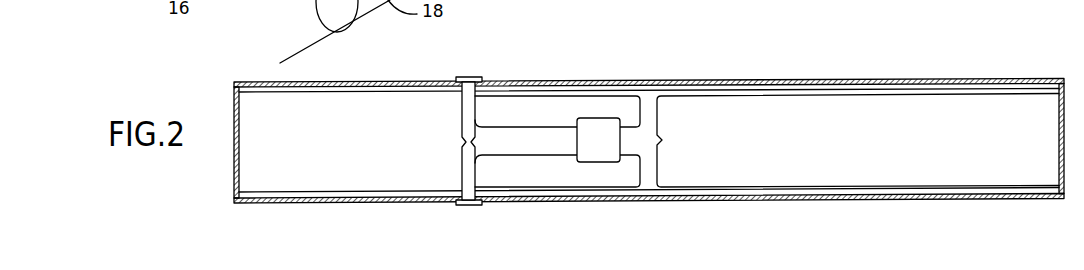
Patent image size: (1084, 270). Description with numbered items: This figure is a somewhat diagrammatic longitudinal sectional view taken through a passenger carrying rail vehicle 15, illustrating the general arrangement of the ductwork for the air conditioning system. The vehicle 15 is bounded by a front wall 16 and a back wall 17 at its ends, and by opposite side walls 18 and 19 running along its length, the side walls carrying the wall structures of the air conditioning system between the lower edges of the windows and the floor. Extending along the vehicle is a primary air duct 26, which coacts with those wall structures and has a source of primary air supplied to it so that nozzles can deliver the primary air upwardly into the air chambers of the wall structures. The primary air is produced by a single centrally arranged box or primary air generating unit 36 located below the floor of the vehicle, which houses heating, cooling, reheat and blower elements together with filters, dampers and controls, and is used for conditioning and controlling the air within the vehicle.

The rail vehicle 15 is at (981, 79).
The front wall 16 is at (234, 170).
The back wall 17 is at (1064, 92).
The side wall 18 is at (798, 200).
The side wall 19 is at (817, 81).
The primary air duct 26 is at (718, 88).
The primary air generating unit 36 is at (611, 114).